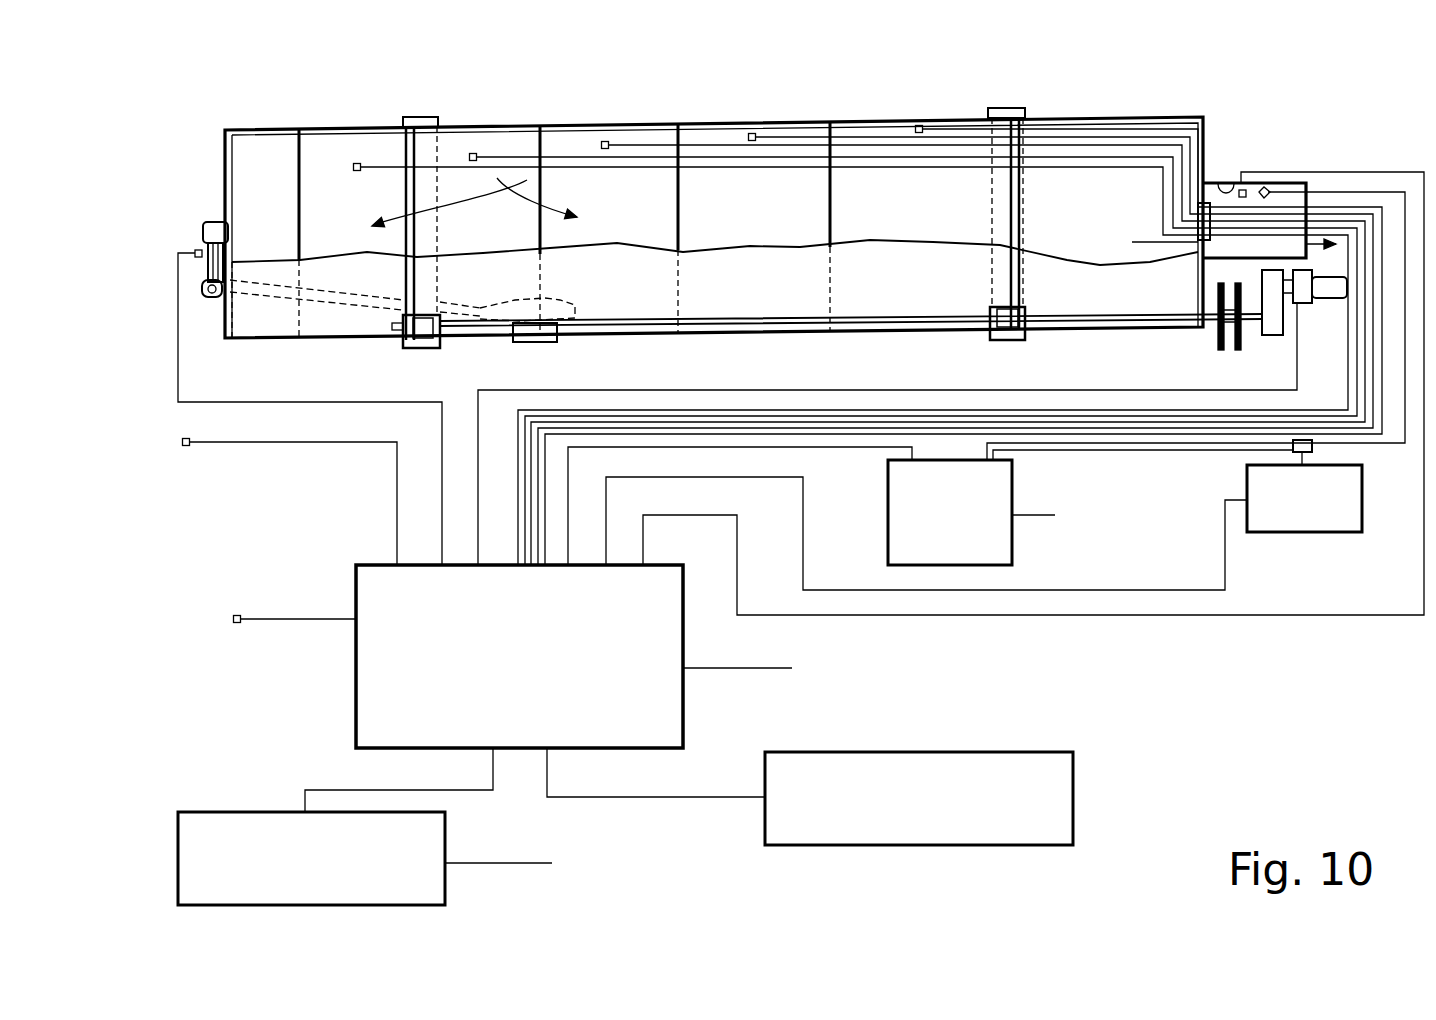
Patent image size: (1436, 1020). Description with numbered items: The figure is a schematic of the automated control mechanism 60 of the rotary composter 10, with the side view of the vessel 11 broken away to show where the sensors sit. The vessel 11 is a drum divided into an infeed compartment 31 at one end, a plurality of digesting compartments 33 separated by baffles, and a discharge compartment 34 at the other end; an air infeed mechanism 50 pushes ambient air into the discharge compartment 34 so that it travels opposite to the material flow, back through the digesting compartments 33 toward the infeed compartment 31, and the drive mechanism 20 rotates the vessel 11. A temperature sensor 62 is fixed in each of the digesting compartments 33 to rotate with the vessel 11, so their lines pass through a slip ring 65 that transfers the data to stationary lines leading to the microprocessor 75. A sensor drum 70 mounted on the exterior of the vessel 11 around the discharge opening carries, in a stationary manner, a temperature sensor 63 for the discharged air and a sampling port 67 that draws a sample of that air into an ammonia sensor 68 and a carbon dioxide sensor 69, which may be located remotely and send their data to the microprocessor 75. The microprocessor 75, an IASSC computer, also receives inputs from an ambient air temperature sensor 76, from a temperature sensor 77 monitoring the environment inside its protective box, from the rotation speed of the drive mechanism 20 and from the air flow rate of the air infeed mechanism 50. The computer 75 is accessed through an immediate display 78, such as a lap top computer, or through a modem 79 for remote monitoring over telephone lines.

The rotary composter 10 is at (1327, 118).
The vessel 11 is at (1204, 118).
The drive mechanism 20 is at (1328, 300).
The infeed compartment 31 is at (1085, 215).
The digesting compartments 33 is at (478, 232).
The discharge compartment 34 is at (265, 200).
The air infeed mechanism 50 is at (203, 225).
The automated control mechanism 60 is at (1180, 707).
The temperature sensors 62 is at (473, 152).
The temperature sensor 63 is at (1228, 183).
The slip ring 65 is at (1198, 238).
The sampling port 67 is at (1342, 190).
The ammonia sensor 68 is at (1317, 532).
The carbon dioxide sensor 69 is at (1012, 553).
The sensor drum 70 is at (1302, 190).
The microprocessor 75 is at (357, 720).
The ambient air temperature sensor 76 is at (186, 438).
The temperature sensor 77 is at (237, 614).
The immediate display 78 is at (445, 885).
The modem 79 is at (1073, 772).